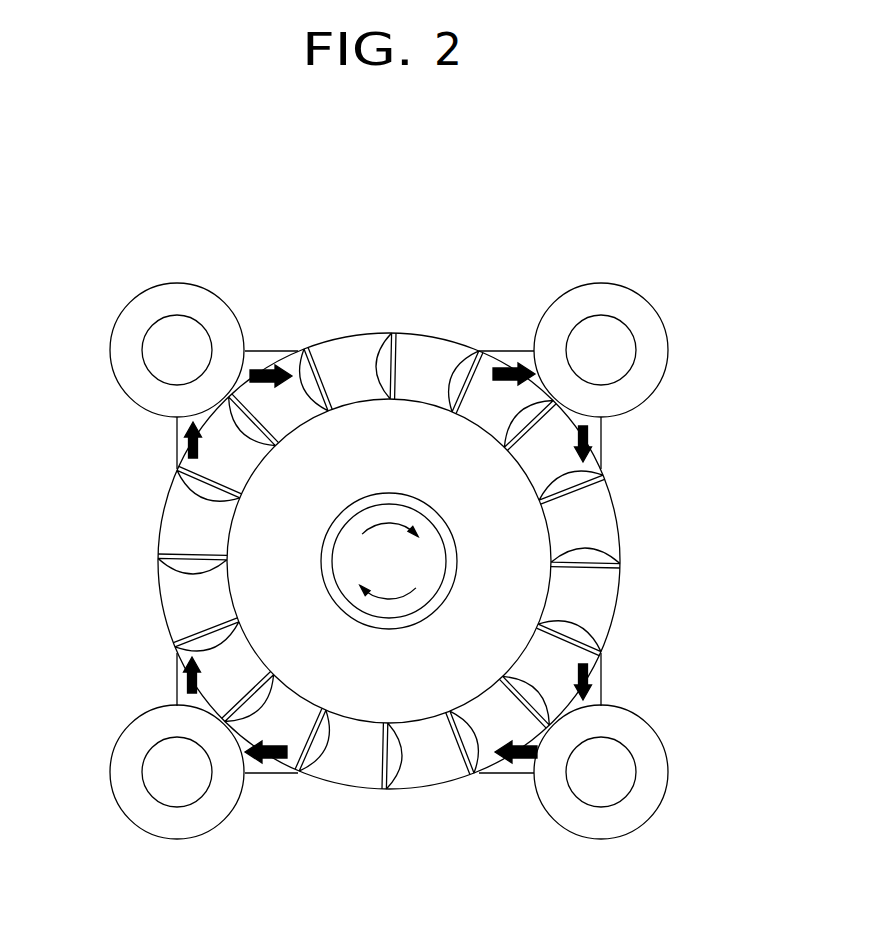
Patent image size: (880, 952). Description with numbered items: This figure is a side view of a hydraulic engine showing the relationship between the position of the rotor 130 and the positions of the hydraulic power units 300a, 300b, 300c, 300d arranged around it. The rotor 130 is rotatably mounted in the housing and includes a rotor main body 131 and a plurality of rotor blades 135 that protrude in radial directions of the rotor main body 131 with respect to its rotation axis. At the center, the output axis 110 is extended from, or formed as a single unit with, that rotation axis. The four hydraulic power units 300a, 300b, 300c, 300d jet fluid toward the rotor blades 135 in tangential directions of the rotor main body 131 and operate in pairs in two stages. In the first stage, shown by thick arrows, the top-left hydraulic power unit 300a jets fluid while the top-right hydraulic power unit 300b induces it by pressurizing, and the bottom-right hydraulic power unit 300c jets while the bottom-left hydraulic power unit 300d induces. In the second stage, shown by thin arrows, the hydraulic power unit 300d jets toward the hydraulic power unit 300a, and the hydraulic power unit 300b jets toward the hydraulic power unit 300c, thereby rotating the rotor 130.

The output axis 110 is at (388, 629).
The rotor 130 is at (618, 497).
The rotor main body 131 is at (257, 542).
The rotor blades 135 is at (396, 352).
The hydraulic power unit 300a is at (230, 288).
The hydraulic power unit 300b is at (660, 313).
The hydraulic power unit 300c is at (655, 720).
The hydraulic power unit 300d is at (138, 710).